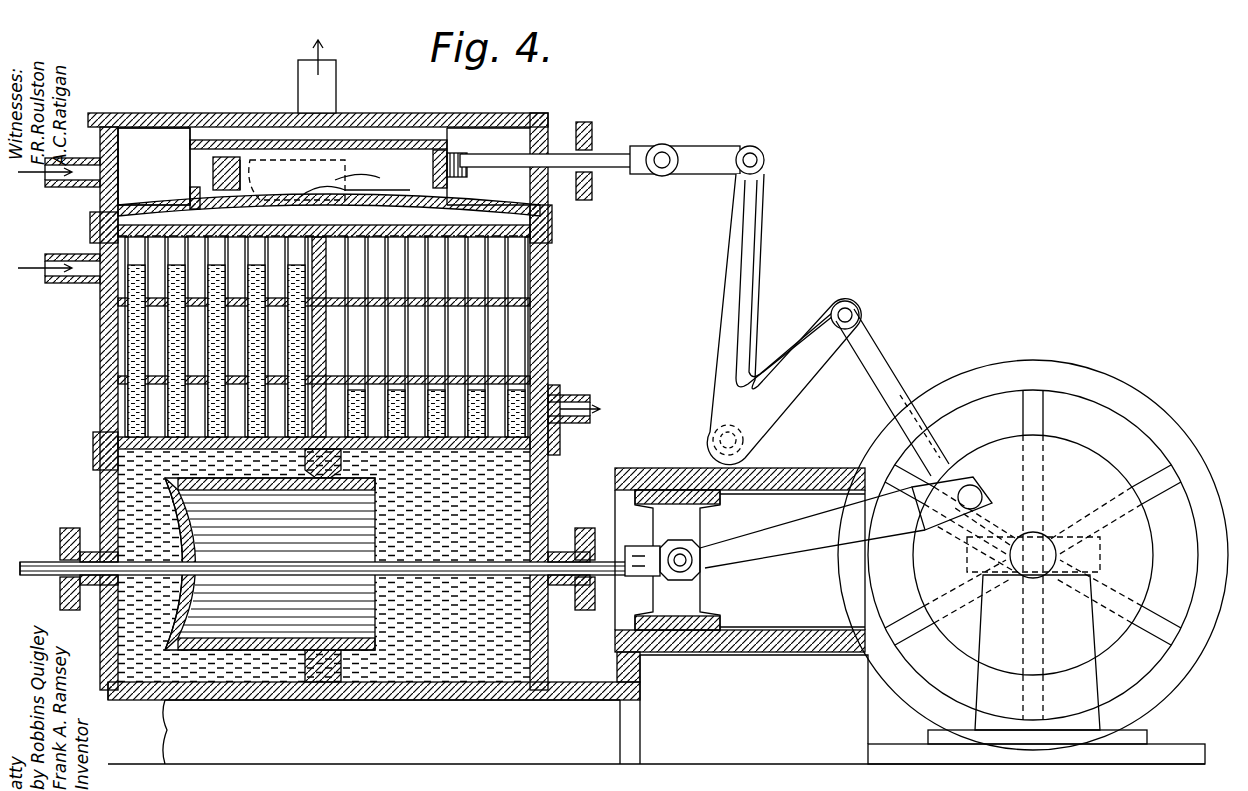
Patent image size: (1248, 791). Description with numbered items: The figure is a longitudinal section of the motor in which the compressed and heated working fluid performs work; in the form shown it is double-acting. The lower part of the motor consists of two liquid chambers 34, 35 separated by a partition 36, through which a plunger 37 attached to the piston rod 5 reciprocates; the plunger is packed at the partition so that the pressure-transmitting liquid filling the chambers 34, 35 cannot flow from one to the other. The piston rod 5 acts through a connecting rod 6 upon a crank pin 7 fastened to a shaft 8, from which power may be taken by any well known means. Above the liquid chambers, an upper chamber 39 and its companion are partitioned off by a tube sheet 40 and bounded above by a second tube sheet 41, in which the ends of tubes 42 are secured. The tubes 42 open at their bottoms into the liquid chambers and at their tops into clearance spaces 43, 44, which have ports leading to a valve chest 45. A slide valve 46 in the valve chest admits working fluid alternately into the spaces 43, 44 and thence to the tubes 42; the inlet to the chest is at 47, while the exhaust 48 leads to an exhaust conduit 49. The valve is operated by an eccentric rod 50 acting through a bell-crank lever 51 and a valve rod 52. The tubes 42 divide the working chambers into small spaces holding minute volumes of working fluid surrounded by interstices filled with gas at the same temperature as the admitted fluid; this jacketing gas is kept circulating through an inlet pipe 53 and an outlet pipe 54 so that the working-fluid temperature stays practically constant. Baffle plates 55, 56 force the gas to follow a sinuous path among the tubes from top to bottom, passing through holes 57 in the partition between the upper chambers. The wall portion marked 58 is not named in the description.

The piston rod 5 is at (505, 562).
The connecting rod 6 is at (820, 535).
The crank pin 7 is at (972, 492).
The shaft 8 is at (1030, 565).
The chamber 34 is at (118, 505).
The chamber 35 is at (500, 484).
The partition 36 is at (305, 684).
The plunger 37 is at (270, 564).
The upper chamber 39 is at (535, 336).
The tube sheet 40 is at (95, 462).
The second tube sheet 41 is at (455, 222).
The tubes 42 is at (510, 268).
The clearance space 43 is at (185, 205).
The clearance space 44 is at (553, 212).
The valve chest 45 is at (154, 166).
The slide valve 46 is at (445, 160).
The inlet 47 is at (72, 182).
The exhaust 48 is at (338, 179).
The exhaust conduit 49 is at (322, 88).
The eccentric rod 50 is at (908, 384).
The bell-crank lever 51 is at (748, 292).
The valve rod 52 is at (612, 158).
The inlet pipe 53 is at (70, 276).
The outlet pipe 54 is at (580, 398).
The baffle plate 55 is at (160, 310).
The baffle plate 56 is at (160, 378).
The holes 57 is at (322, 272).
The casing wall 58 is at (118, 355).